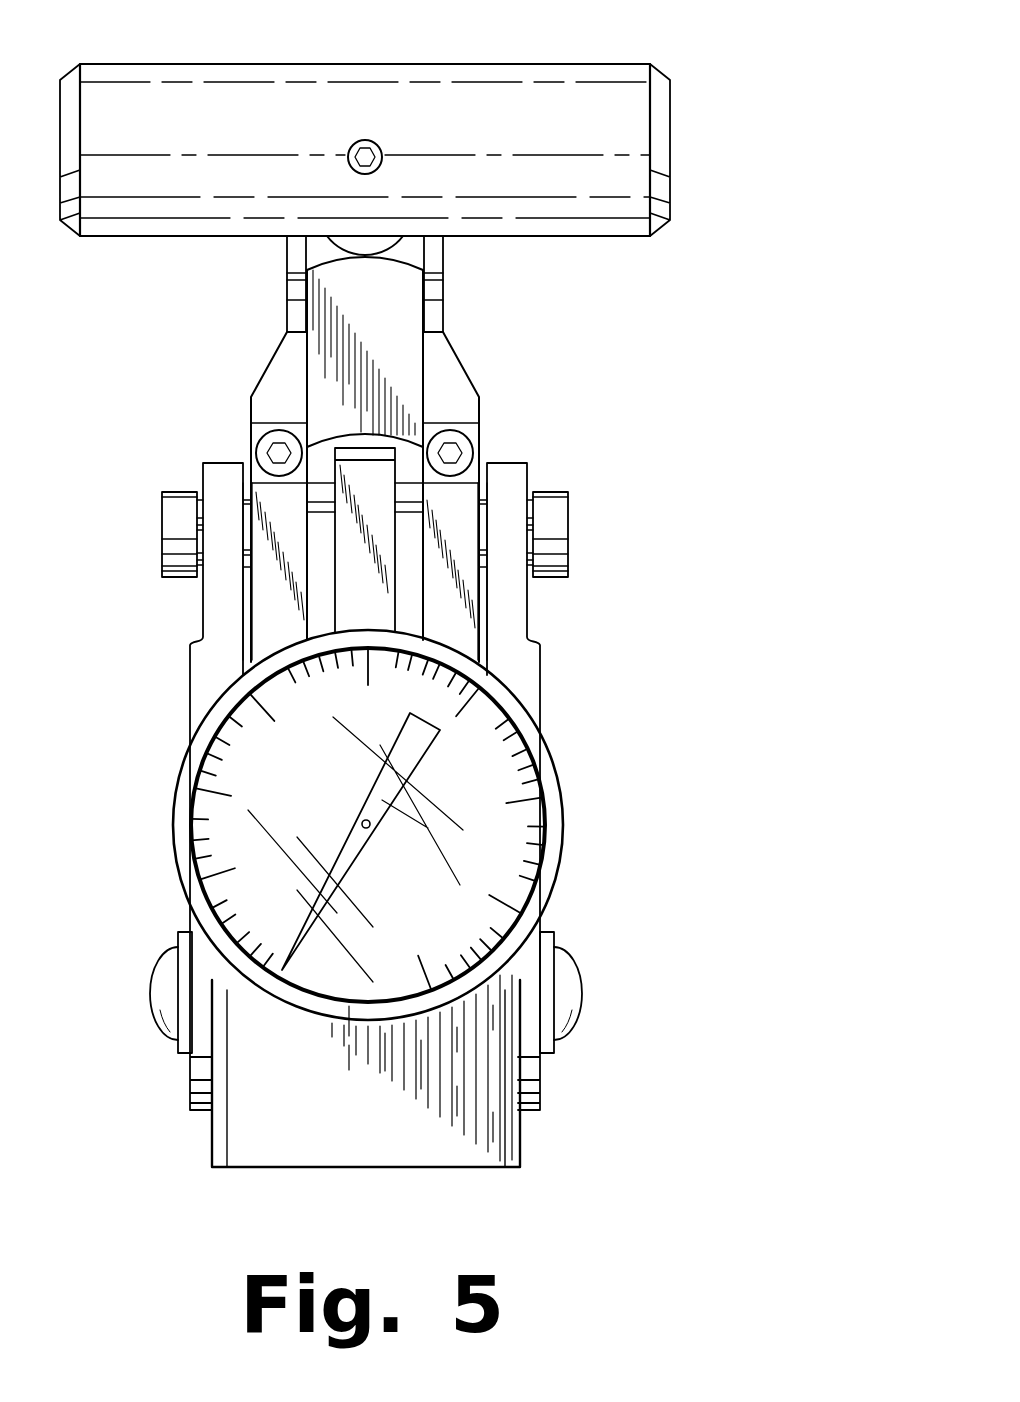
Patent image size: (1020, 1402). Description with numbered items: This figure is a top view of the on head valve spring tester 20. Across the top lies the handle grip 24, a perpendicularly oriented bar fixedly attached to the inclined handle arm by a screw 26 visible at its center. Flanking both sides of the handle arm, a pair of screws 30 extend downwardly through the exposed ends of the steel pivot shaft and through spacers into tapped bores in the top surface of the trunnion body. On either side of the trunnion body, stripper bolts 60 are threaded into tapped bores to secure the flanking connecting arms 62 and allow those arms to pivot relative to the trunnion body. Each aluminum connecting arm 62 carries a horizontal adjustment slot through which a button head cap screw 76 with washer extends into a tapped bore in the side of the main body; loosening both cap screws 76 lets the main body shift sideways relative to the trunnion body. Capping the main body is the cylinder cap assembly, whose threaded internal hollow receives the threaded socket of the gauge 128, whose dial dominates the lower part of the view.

The on head valve spring tester 20 is at (762, 353).
The handle grip 24 is at (623, 122).
The screw 26 is at (365, 140).
The screws 30 is at (279, 453).
The stripper bolts 60 is at (178, 523).
The connecting arms 62 is at (207, 677).
The button head cap screws 76 is at (160, 990).
The gauge 128 is at (517, 810).